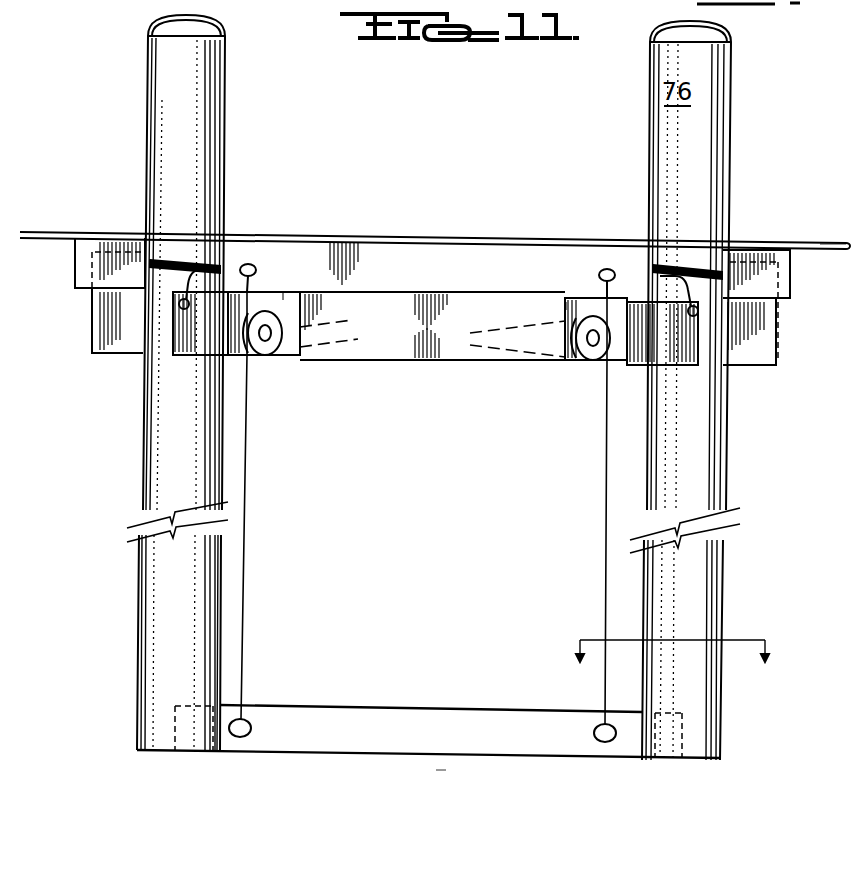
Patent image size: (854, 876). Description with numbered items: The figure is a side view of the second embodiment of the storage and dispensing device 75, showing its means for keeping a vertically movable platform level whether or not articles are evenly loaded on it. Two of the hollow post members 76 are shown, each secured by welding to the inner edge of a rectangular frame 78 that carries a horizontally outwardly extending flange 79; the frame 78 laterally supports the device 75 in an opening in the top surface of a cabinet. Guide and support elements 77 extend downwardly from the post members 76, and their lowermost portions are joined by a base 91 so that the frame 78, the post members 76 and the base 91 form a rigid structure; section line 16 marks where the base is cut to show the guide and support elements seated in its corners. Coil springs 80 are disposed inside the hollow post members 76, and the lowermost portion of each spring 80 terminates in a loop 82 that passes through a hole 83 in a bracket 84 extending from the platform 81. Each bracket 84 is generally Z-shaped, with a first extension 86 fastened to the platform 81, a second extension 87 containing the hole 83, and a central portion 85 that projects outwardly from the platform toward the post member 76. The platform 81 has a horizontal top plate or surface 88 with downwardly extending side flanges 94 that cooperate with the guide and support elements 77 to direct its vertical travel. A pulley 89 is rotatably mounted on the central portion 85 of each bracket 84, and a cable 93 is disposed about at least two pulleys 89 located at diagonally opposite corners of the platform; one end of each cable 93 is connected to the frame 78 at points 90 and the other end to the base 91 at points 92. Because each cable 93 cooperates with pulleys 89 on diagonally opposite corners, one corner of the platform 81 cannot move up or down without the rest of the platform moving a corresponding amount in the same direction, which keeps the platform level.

The section line 16- 16 is at (673, 666).
The storage and dispensing device 75 is at (442, 768).
The hollow post members 76 is at (190, 95).
The guide and support elements 77 is at (197, 481).
The frame 78 is at (387, 233).
The horizontally outwardly extending flange 79 is at (812, 243).
The coil springs 80 is at (150, 255).
The platform 81 is at (440, 372).
The loop 82 is at (180, 305).
The hole 83 is at (190, 286).
The brackets 84 is at (245, 357).
The central portion 85 is at (256, 294).
The first extension 86 is at (284, 292).
The second extension 87 is at (190, 340).
The top plate or surface 88 is at (750, 262).
The pulley 89 is at (272, 342).
The points 90 is at (248, 263).
The base 91 is at (444, 740).
The points 92 is at (241, 738).
The cable 93 is at (246, 586).
The side flanges 94 is at (778, 318).